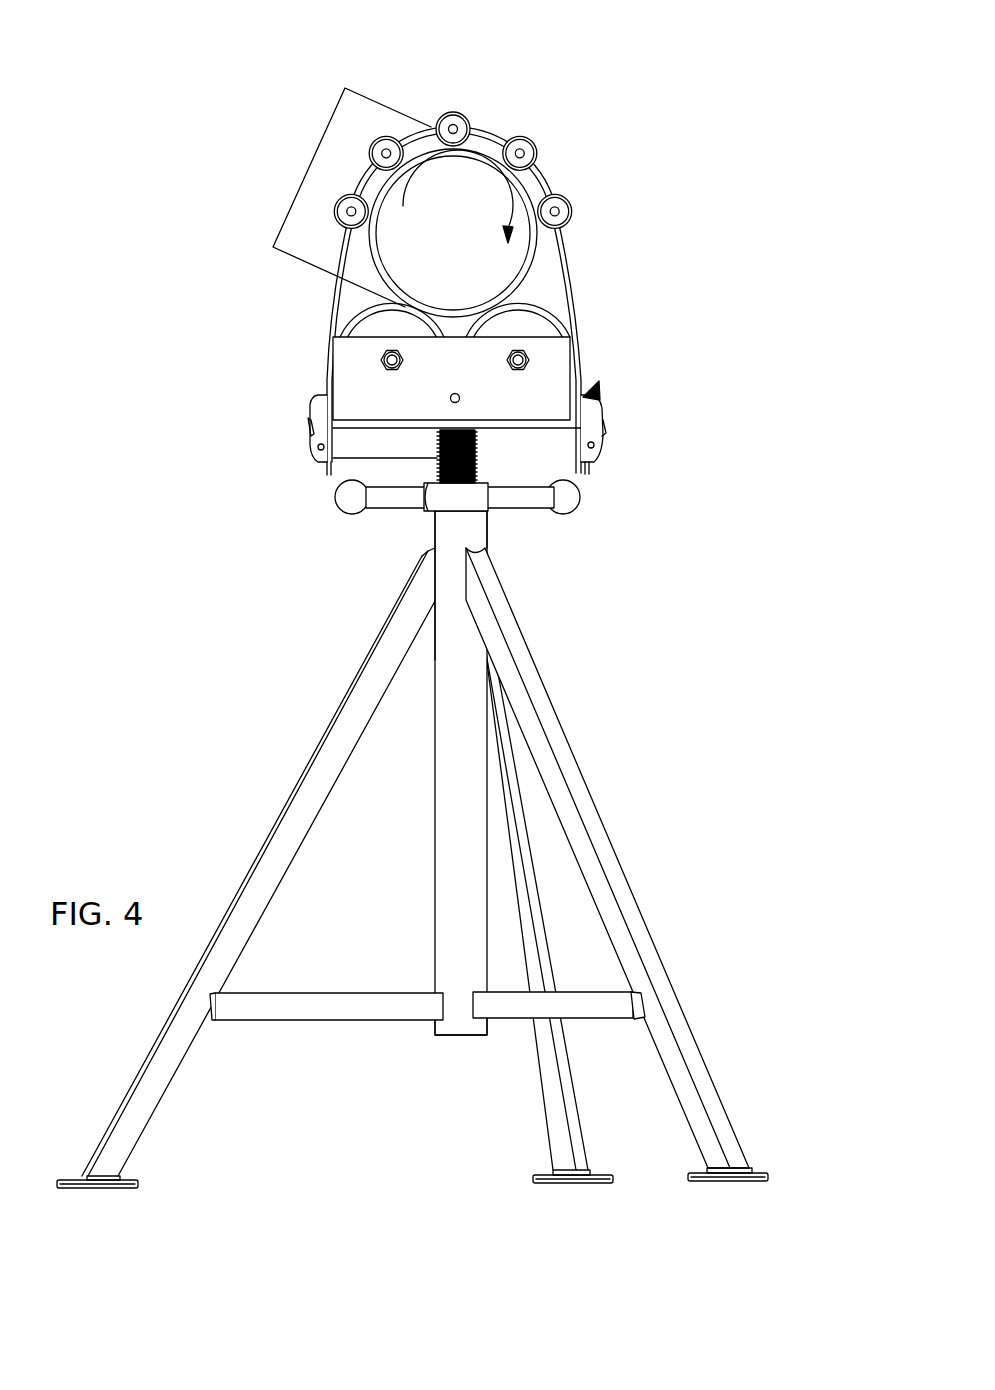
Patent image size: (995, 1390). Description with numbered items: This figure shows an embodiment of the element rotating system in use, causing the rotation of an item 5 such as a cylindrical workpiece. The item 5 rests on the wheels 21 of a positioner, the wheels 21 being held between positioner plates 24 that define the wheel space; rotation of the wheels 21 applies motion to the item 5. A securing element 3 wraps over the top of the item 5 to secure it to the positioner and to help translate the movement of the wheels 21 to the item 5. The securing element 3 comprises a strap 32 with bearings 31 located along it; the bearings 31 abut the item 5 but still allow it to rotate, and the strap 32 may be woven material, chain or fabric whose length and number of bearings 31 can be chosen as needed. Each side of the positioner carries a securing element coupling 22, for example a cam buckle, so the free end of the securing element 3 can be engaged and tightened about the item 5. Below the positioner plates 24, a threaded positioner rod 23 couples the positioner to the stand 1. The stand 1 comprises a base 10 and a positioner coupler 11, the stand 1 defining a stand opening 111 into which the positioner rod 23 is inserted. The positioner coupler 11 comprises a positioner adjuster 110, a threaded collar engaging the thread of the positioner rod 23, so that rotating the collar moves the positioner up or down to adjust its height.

The stand 1 is at (412, 897).
The securing element 3 is at (557, 121).
The item 5 is at (332, 170).
The base 10 is at (312, 760).
The positioner coupler 11 is at (497, 530).
The positioner adjuster 110 is at (458, 498).
The stand opening 111 is at (465, 885).
The wheel 21 is at (540, 312).
The securing element coupling 22 is at (603, 410).
The positioner rod 23 is at (437, 457).
The positioner plate 24 is at (352, 372).
The bearing 31 is at (452, 111).
The strap 32 is at (420, 127).